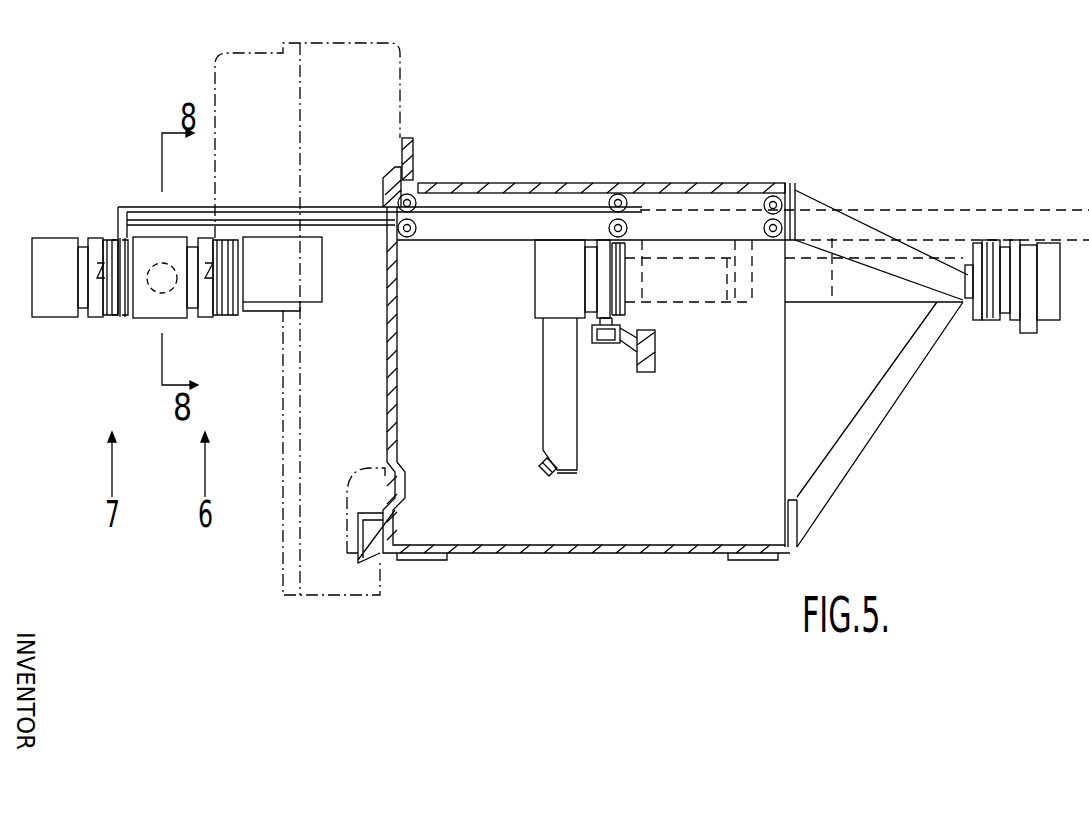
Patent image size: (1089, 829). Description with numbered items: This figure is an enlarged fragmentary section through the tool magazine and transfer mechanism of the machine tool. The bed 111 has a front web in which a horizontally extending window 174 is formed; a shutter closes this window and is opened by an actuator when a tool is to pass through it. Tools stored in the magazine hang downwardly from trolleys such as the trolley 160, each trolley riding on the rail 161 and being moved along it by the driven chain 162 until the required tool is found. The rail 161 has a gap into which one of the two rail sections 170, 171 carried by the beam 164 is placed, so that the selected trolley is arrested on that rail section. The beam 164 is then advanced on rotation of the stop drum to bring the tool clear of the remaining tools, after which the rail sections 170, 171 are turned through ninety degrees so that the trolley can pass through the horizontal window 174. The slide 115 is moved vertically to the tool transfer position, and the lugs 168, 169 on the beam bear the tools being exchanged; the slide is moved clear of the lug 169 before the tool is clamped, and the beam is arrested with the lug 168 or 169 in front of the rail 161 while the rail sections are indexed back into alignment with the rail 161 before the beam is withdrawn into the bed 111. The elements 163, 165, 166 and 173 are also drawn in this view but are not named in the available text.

The bed 111 is at (470, 553).
The slide 115 is at (337, 515).
The trolley 160 is at (100, 275).
The rail 161 is at (977, 280).
The chain 162 is at (605, 343).
The shaft 163 is at (103, 228).
The beam 164 is at (338, 212).
The track 165 is at (515, 213).
The rollers 166 is at (416, 228).
The lug 168 is at (235, 288).
The lug 169 is at (125, 280).
The rail section 170 is at (235, 292).
The rail section 171 is at (119, 283).
The motor housing 173 is at (310, 277).
The window 174 is at (392, 352).